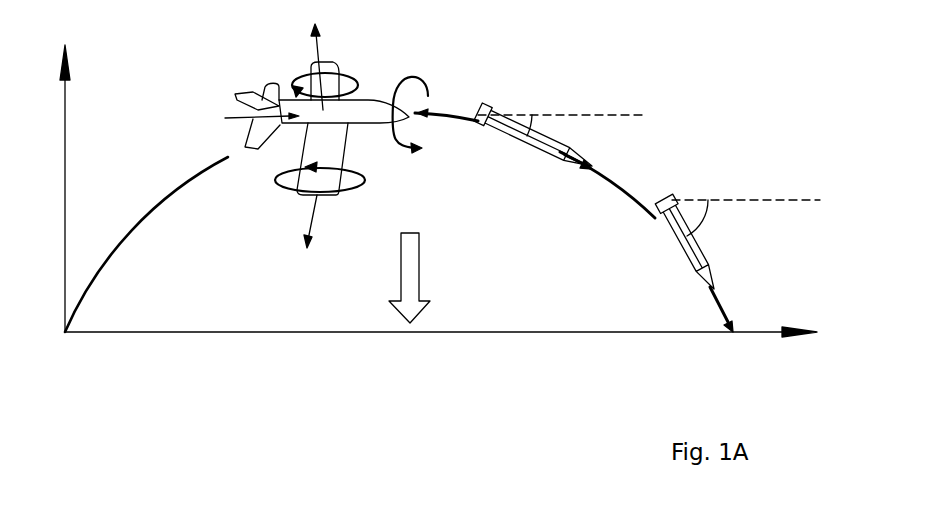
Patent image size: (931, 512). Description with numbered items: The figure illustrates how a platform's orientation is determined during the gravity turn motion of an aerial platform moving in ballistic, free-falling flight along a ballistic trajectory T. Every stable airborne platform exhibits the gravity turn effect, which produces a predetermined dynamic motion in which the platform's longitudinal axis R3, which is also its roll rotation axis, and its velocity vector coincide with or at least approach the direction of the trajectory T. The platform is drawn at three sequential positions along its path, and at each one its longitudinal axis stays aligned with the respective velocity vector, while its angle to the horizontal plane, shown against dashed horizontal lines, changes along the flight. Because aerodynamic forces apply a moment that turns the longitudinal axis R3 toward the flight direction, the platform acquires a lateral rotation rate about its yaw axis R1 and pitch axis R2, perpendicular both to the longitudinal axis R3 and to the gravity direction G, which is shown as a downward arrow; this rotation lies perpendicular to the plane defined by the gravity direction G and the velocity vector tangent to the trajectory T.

The yaw axis R1 is at (325, 63).
The pitch axis R2 is at (320, 217).
The longitudinal/roll axis R3 is at (431, 115).
The ballistic trajectory T is at (633, 206).
The gravity force direction G is at (408, 278).